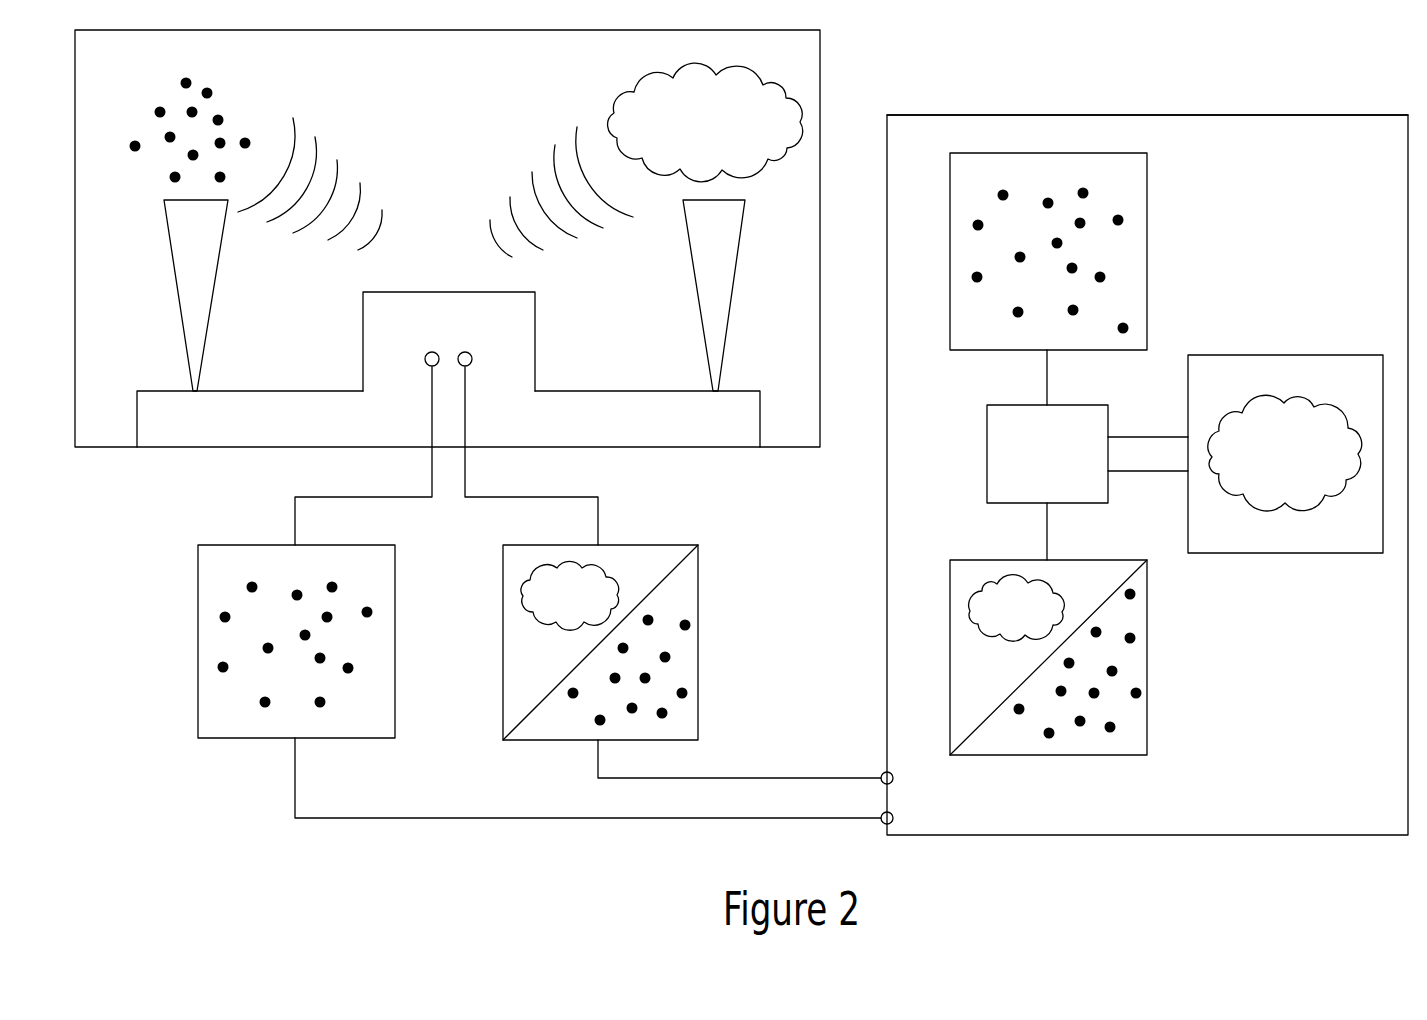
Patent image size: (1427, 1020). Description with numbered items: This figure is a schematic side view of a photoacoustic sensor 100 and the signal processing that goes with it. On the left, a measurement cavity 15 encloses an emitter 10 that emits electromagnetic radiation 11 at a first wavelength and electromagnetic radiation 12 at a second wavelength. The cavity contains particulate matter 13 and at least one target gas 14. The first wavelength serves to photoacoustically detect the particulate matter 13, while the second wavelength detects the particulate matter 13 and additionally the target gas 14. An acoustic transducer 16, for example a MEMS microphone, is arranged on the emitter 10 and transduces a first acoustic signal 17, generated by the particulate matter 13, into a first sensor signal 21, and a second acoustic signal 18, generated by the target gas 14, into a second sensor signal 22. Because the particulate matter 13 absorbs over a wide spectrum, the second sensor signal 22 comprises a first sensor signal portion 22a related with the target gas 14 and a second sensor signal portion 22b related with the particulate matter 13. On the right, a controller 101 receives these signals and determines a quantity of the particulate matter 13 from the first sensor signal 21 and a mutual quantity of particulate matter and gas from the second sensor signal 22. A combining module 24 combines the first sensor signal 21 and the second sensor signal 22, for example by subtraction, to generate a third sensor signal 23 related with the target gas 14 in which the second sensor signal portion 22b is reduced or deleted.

The emitter 10 is at (283, 391).
The electromagnetic radiation at a first wavelength 11 is at (175, 280).
The electromagnetic radiation at a second wavelength 12 is at (732, 290).
The particulate matter 13 is at (246, 114).
The target gas 14 is at (760, 170).
The measurement cavity 15 is at (465, 73).
The acoustic transducer 16 is at (455, 292).
The first acoustic signal 17 is at (355, 172).
The second acoustic signal 18 is at (512, 172).
The first sensor signal 21 is at (198, 643).
The second sensor signal 22 is at (712, 647).
The first sensor signal portion 22a is at (500, 661).
The second sensor signal portion 22b is at (685, 600).
The third sensor signal 23 is at (1290, 355).
The combining module 24 is at (987, 455).
The photoacoustic sensor 100 is at (1317, 47).
The controller 101 is at (1152, 115).